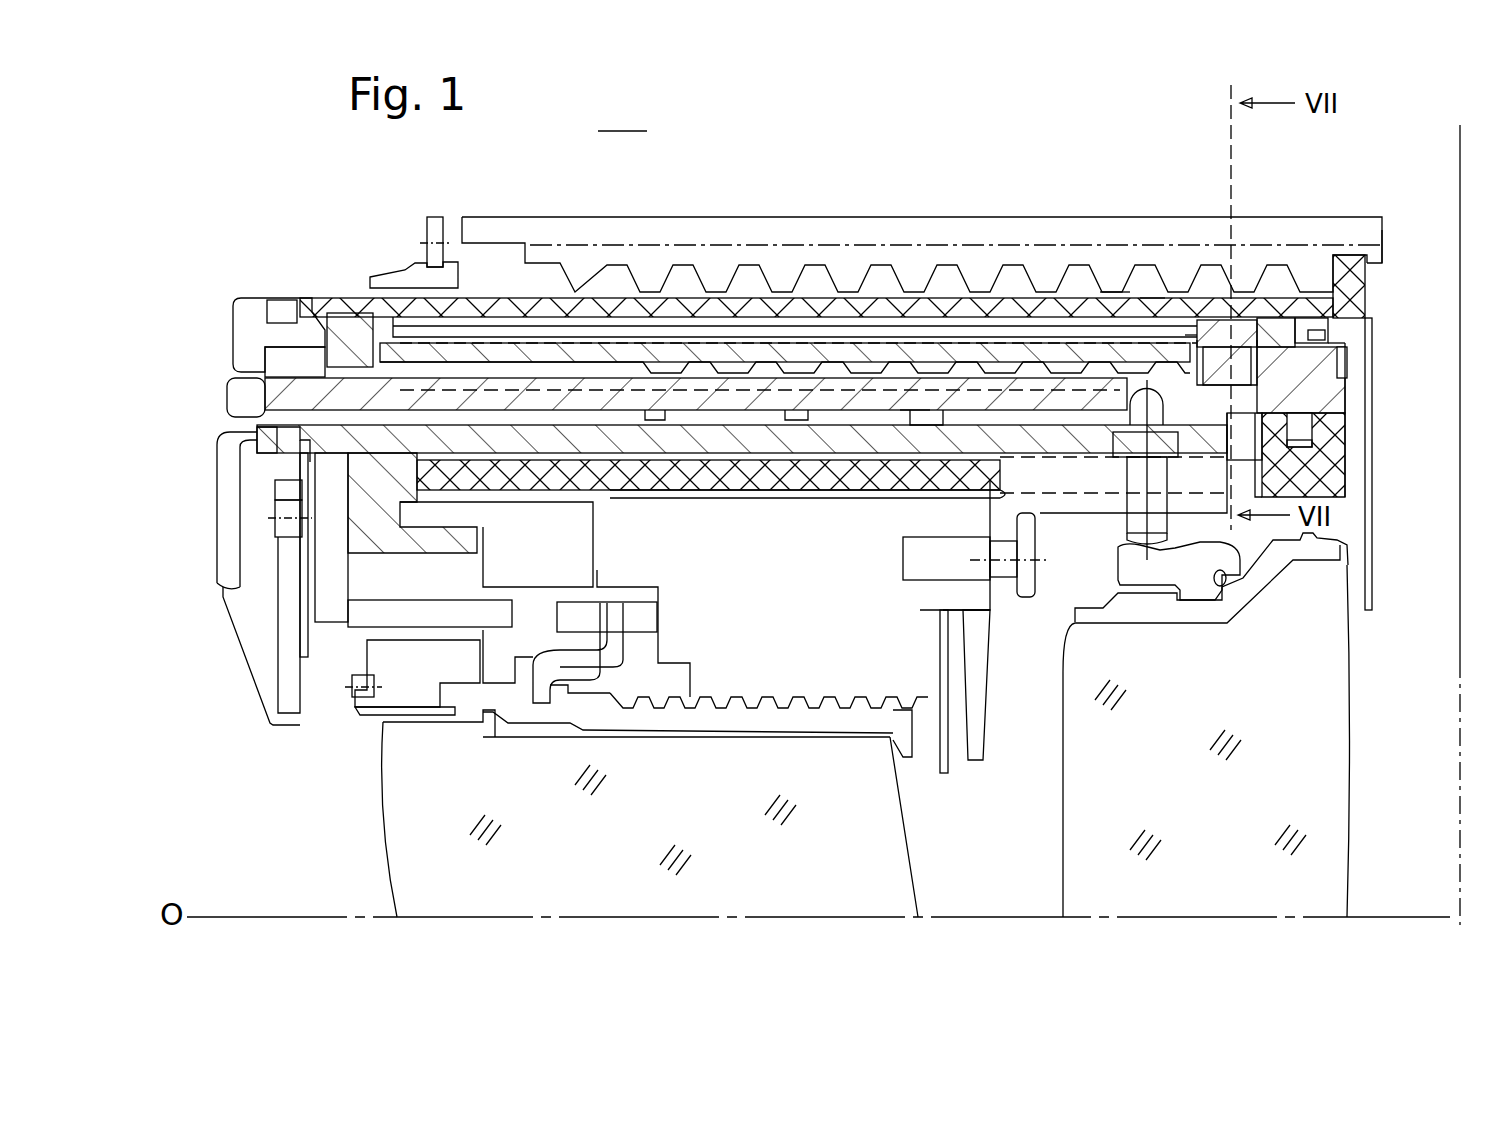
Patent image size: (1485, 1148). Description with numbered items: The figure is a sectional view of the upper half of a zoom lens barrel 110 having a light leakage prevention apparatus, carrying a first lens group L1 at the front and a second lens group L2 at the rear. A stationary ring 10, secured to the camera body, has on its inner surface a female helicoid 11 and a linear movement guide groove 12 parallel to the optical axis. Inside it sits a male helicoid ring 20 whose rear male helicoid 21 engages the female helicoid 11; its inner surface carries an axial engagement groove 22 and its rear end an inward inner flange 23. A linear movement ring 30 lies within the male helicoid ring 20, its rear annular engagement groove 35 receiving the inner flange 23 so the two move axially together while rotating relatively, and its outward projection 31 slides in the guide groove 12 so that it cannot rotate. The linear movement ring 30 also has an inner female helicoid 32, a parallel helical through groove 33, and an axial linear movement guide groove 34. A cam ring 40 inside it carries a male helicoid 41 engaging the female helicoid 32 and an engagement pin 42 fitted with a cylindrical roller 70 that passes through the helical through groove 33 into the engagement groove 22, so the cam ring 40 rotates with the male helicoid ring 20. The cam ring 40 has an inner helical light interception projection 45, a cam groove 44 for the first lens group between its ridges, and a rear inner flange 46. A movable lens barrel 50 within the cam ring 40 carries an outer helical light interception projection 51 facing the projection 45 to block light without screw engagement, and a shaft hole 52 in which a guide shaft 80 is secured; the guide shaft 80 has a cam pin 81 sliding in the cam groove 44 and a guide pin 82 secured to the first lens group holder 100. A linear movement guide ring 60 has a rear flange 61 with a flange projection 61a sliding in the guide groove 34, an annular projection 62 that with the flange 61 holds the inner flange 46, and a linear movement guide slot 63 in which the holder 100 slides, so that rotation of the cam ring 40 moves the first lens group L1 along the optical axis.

The zoom lens barrel 110 is at (626, 114).
The stationary ring 10 is at (493, 228).
The female helicoid 11 is at (1045, 282).
The linear movement guide groove 12 is at (1376, 262).
The male helicoid ring 20 is at (282, 305).
The male helicoid 21 is at (1072, 282).
The engagement groove 22 is at (707, 335).
The inner flange 23 is at (1328, 335).
The linear movement ring 30 is at (338, 340).
The projection 31 is at (1348, 300).
The female helicoid 32 is at (1117, 292).
The helical through groove 33 is at (1197, 335).
The linear movement guide groove 34 is at (1290, 380).
The annular engagement groove 35 is at (1340, 310).
The cam ring 40 is at (285, 383).
The male helicoid 41 is at (1150, 298).
The engagement pin 42 is at (1240, 325).
The cam groove 44 is at (985, 415).
The inner helical light interception projection 45 is at (933, 405).
The inner flange 46 is at (1320, 412).
The movable lens barrel 50 is at (257, 445).
The outer helical light interception projection 51 is at (937, 425).
The shaft hole 52 is at (1262, 462).
The linear movement guide ring 60 is at (290, 445).
The flange 61 is at (1300, 398).
The flange projection 61a is at (1340, 360).
The annular projection 62 is at (1300, 440).
The linear movement guide slot 63 is at (477, 473).
The cylindrical roller 70 is at (1205, 340).
The guide shaft 80 is at (1108, 575).
The cam pin 81 is at (1138, 425).
The guide pin 82 is at (1137, 522).
The first lens group holder 100 is at (1023, 498).
The first lens group L1 is at (620, 882).
The second lens group L2 is at (1215, 882).